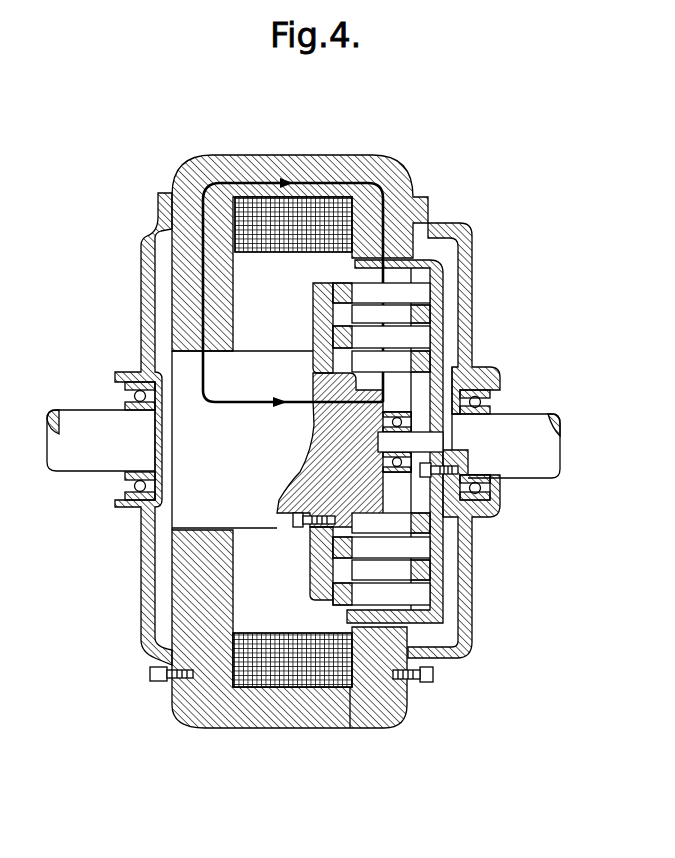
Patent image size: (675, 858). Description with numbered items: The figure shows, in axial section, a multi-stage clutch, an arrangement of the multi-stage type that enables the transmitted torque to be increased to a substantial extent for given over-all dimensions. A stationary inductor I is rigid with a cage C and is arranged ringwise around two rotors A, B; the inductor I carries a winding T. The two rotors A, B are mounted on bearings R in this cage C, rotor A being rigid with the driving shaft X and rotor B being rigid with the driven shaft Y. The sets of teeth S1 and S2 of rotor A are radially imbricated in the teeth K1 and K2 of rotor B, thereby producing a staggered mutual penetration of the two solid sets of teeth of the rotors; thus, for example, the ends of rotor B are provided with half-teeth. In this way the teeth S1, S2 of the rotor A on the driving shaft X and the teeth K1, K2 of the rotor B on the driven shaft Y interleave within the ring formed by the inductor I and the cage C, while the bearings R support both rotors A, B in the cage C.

The stationary inductor I is at (365, 157).
The exciting coil T is at (285, 233).
The cage C is at (148, 261).
The bearings R is at (122, 385).
The driving shaft X is at (101, 441).
The driven shaft Y is at (506, 422).
The rotor A is at (312, 569).
The rotor B is at (441, 616).
The set of teeth of rotor A S1 is at (405, 340).
The set of teeth of rotor A S2 is at (405, 296).
The teeth of rotor B K1 is at (405, 359).
The teeth of rotor B K2 is at (400, 317).